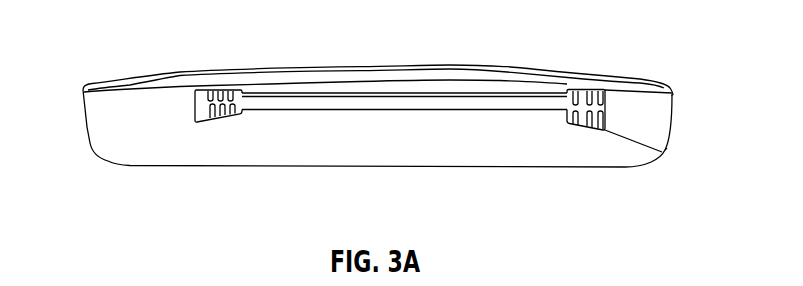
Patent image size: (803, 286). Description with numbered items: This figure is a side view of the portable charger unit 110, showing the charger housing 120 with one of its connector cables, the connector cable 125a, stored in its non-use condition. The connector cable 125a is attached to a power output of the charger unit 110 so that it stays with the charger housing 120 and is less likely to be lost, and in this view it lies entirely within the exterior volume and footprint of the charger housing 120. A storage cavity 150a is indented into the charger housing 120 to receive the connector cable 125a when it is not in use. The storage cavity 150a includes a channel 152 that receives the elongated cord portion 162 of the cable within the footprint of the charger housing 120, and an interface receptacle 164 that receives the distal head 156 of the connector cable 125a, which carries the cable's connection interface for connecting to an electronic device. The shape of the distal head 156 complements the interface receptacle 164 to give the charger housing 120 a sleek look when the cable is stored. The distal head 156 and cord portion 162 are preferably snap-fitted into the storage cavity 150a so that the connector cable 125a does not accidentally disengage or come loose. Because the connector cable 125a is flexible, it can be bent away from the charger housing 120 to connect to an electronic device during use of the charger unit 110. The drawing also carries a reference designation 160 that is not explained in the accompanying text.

The charger unit 110 is at (613, 51).
The charger housing 120 is at (150, 148).
The connector cable 125a is at (397, 86).
The storage cavity 150a is at (673, 151).
The channel 152 is at (540, 85).
The distal head 156 is at (689, 96).
The connector assembly 160 is at (101, 45).
The cord portion 162 is at (292, 100).
The interface receptacle 164 is at (653, 113).